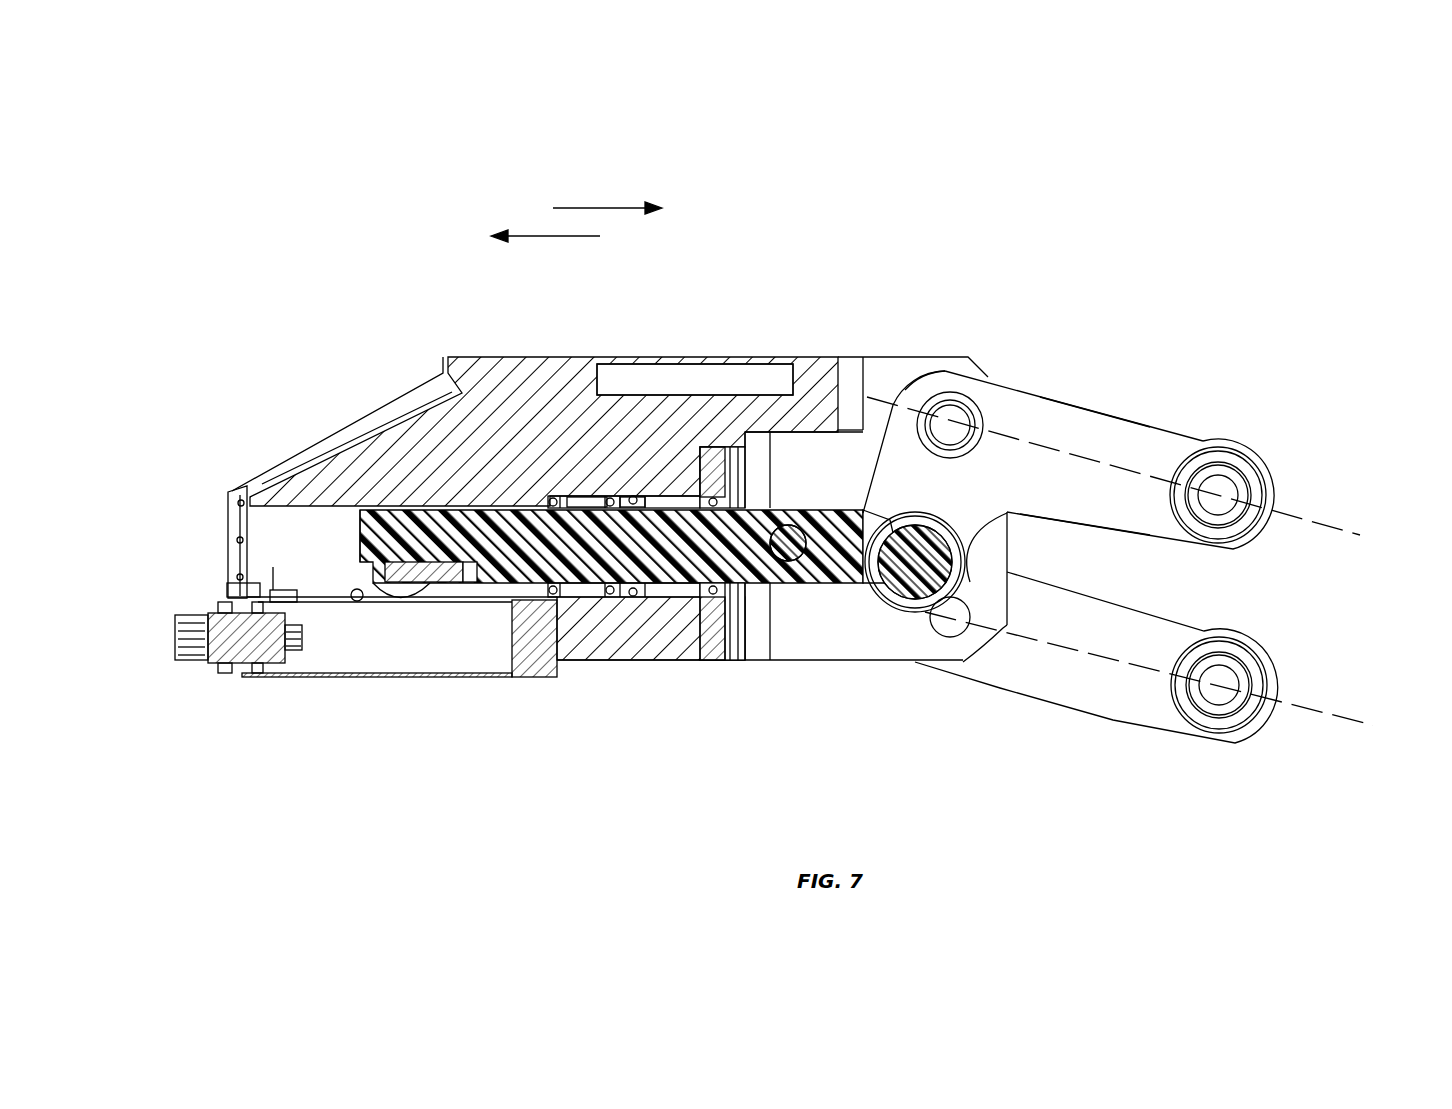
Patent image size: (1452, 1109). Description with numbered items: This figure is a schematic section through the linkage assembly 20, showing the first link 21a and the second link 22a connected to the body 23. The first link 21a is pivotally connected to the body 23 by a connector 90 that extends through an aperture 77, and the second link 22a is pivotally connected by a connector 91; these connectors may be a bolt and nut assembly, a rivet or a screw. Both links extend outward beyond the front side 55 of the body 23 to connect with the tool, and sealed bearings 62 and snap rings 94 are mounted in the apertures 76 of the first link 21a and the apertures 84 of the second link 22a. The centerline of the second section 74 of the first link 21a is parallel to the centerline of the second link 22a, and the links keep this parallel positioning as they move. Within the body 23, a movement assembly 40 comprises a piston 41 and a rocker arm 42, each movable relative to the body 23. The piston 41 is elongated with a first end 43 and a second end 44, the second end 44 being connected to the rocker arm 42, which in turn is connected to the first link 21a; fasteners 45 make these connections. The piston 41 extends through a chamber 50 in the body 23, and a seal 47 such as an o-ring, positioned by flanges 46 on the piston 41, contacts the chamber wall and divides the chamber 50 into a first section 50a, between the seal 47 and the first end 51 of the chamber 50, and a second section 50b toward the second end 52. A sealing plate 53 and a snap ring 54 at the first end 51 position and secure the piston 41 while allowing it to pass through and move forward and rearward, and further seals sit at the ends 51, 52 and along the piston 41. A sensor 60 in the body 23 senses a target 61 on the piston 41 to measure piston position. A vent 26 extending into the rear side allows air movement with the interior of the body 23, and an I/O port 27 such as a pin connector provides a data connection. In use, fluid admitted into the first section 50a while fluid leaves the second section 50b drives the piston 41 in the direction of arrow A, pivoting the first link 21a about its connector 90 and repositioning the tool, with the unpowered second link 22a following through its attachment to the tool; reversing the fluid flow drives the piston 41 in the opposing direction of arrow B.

The linkage assembly 20 is at (915, 268).
The first link 21a is at (1030, 385).
The second link 22a is at (1118, 722).
The body 23 is at (716, 374).
The vent 26 is at (227, 528).
The I/O port 27 is at (203, 640).
The movement assembly 40 is at (800, 607).
The piston 41 is at (512, 500).
The rocker arm 42 is at (862, 580).
The first end 43 is at (372, 537).
The second end 44 is at (815, 585).
The fasteners 45 is at (790, 515).
The flanges 46 is at (655, 612).
The seal 47 is at (628, 497).
The chamber 50 is at (605, 630).
The first section 50a is at (662, 497).
The second section 50b is at (575, 640).
The first end 51 is at (712, 650).
The second end 52 is at (575, 497).
The sealing plate 53 is at (727, 650).
The snap ring 54 is at (735, 630).
The front side 55 is at (1048, 540).
The sensor 60 is at (322, 680).
The target 61 is at (385, 577).
The sealed bearings 62 is at (1218, 452).
The second section 74 is at (1082, 425).
The apertures 76 is at (1270, 490).
The aperture 77 is at (935, 372).
The apertures 84 is at (1262, 725).
The connector 90 is at (952, 418).
The connector 91 is at (943, 625).
The snap rings 94 is at (1235, 468).
The arrow A is at (549, 237).
The arrow B is at (606, 208).